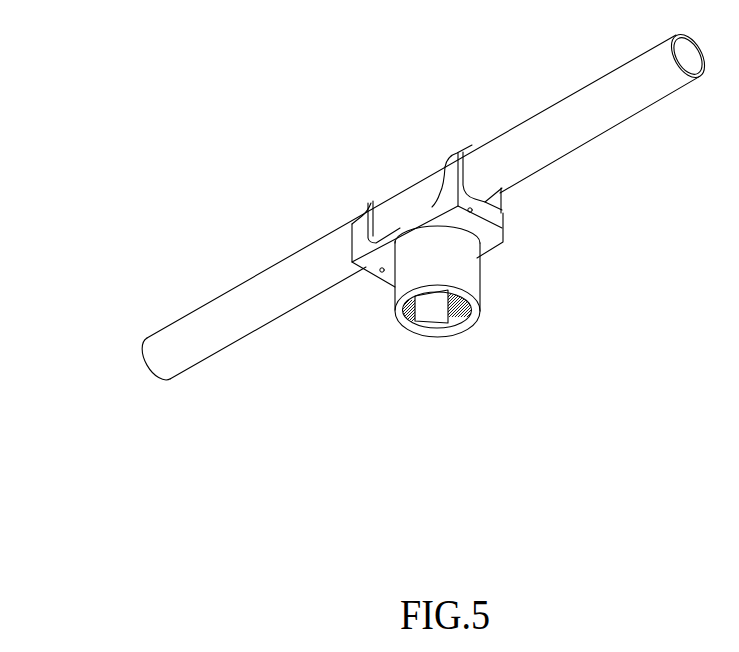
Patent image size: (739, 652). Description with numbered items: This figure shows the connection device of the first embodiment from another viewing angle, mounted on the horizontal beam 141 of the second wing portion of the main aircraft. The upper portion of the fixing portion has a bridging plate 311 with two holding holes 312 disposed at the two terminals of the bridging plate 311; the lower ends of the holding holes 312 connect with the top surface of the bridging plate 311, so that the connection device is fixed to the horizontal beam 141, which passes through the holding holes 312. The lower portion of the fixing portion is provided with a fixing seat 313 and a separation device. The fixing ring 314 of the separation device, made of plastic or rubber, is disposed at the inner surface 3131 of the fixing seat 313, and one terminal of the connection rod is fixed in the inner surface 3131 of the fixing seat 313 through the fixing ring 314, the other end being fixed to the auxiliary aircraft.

The horizontal beam 141 is at (193, 315).
The bridging plate 311 is at (502, 237).
The holding holes 312 is at (377, 202).
The fixing seat 313 is at (401, 293).
The inner surface 3131 is at (427, 315).
The fixing ring 314 is at (456, 318).